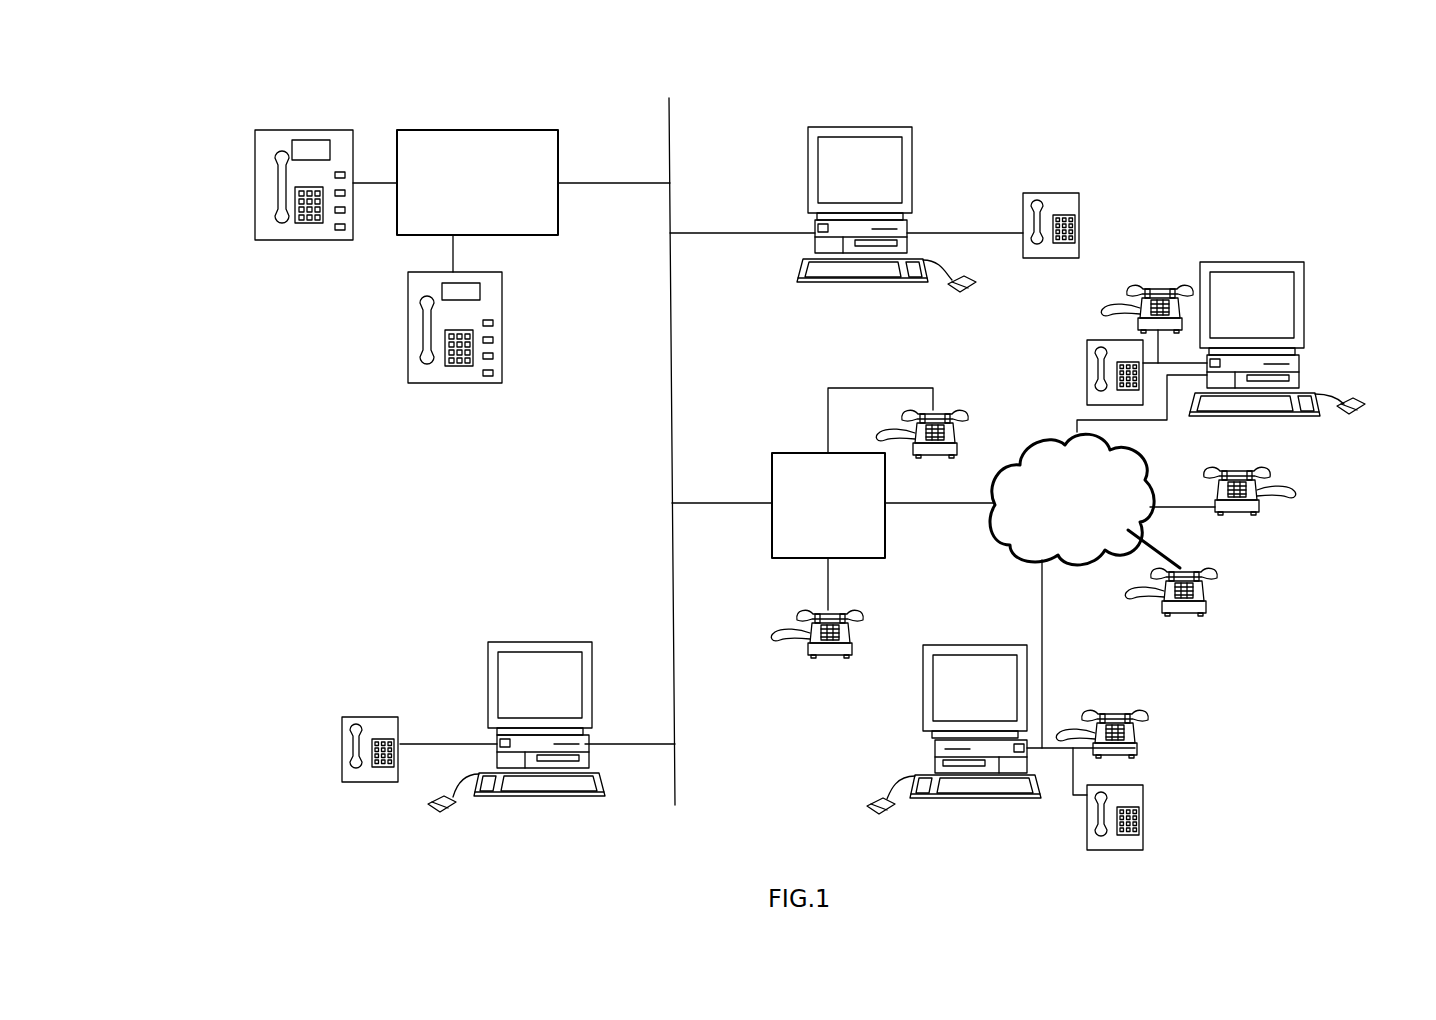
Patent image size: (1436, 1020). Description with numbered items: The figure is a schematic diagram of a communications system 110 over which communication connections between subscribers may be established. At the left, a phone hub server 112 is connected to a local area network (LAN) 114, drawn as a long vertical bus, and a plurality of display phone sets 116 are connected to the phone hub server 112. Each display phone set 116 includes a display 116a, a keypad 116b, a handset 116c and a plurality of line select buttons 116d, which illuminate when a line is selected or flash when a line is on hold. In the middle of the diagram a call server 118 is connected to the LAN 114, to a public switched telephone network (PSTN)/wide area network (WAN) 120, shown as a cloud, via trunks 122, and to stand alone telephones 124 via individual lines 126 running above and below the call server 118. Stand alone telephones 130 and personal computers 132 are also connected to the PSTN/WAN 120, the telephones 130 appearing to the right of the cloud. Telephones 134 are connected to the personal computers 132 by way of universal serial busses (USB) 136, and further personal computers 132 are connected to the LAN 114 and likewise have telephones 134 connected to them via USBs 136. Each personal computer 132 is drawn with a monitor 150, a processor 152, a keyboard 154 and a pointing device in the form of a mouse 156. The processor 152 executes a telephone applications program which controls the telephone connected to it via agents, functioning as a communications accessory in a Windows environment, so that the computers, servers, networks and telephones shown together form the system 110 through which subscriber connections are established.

The communications system 110 is at (1230, 160).
The phone hub server 112 is at (480, 135).
The local area network (LAN) 114 is at (695, 151).
The display phone set 116 is at (377, 269).
The display 116a is at (307, 140).
The keypad 116b is at (308, 223).
The handset 116c is at (282, 188).
The line select buttons 116d is at (340, 230).
The call server 118 is at (798, 453).
The public switched telephone network (PSTN)/wide area network (WAN) 120 is at (1090, 560).
The trunks 122 is at (962, 503).
The stand alone telephones 124 is at (960, 437).
The individual lines 126 is at (858, 388).
The stand alone telephones 130 is at (1265, 475).
The personal computers 132 is at (899, 477).
The telephones 134 is at (1070, 193).
The universal serial busses (USB) 136 is at (965, 232).
The monitor 150 is at (882, 150).
The processor 152 is at (820, 243).
The keyboard 154 is at (855, 270).
The mouse 156 is at (976, 286).